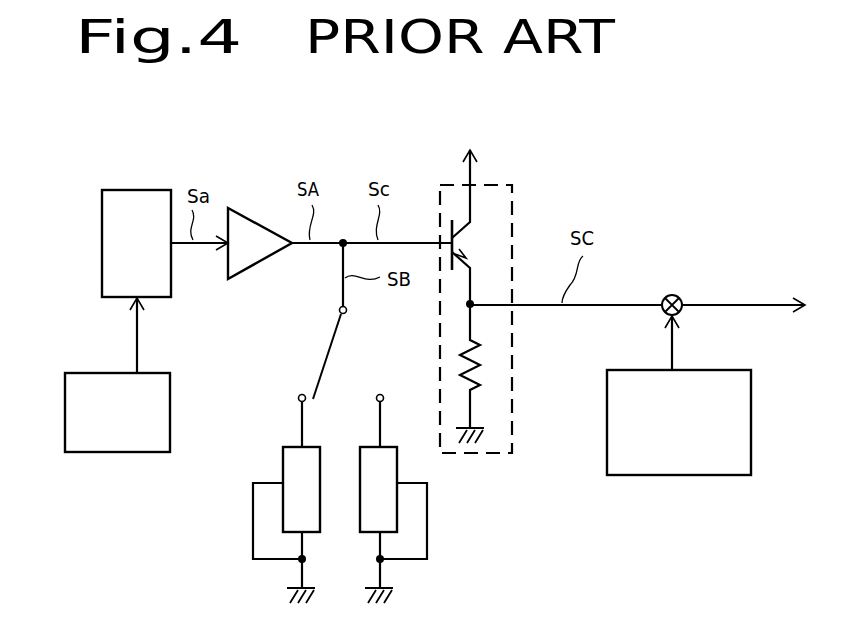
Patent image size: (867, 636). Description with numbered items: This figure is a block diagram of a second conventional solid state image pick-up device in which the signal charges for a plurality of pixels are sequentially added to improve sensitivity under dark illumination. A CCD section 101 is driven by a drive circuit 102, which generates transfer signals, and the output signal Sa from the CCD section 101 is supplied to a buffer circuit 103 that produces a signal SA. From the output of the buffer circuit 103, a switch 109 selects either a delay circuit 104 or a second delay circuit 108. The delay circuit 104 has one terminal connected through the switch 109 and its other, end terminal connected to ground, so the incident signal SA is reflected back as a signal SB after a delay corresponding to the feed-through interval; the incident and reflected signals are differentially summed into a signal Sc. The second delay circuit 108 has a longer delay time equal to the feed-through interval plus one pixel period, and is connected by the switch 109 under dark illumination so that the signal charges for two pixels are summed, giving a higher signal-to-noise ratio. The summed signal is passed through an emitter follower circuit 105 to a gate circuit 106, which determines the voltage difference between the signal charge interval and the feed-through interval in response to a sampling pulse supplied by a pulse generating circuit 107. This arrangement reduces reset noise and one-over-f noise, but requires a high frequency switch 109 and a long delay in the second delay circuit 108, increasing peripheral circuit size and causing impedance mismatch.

The CCD section 101 is at (102, 238).
The drive circuit 102 is at (88, 452).
The buffer circuit 103 is at (257, 211).
The delay circuit 104 is at (283, 464).
The emitter follower circuit 105 is at (515, 425).
The gate circuit 106 is at (683, 298).
The pulse generating circuit 107 is at (708, 475).
The second delay circuit 108 is at (397, 467).
The switch 109 is at (330, 328).